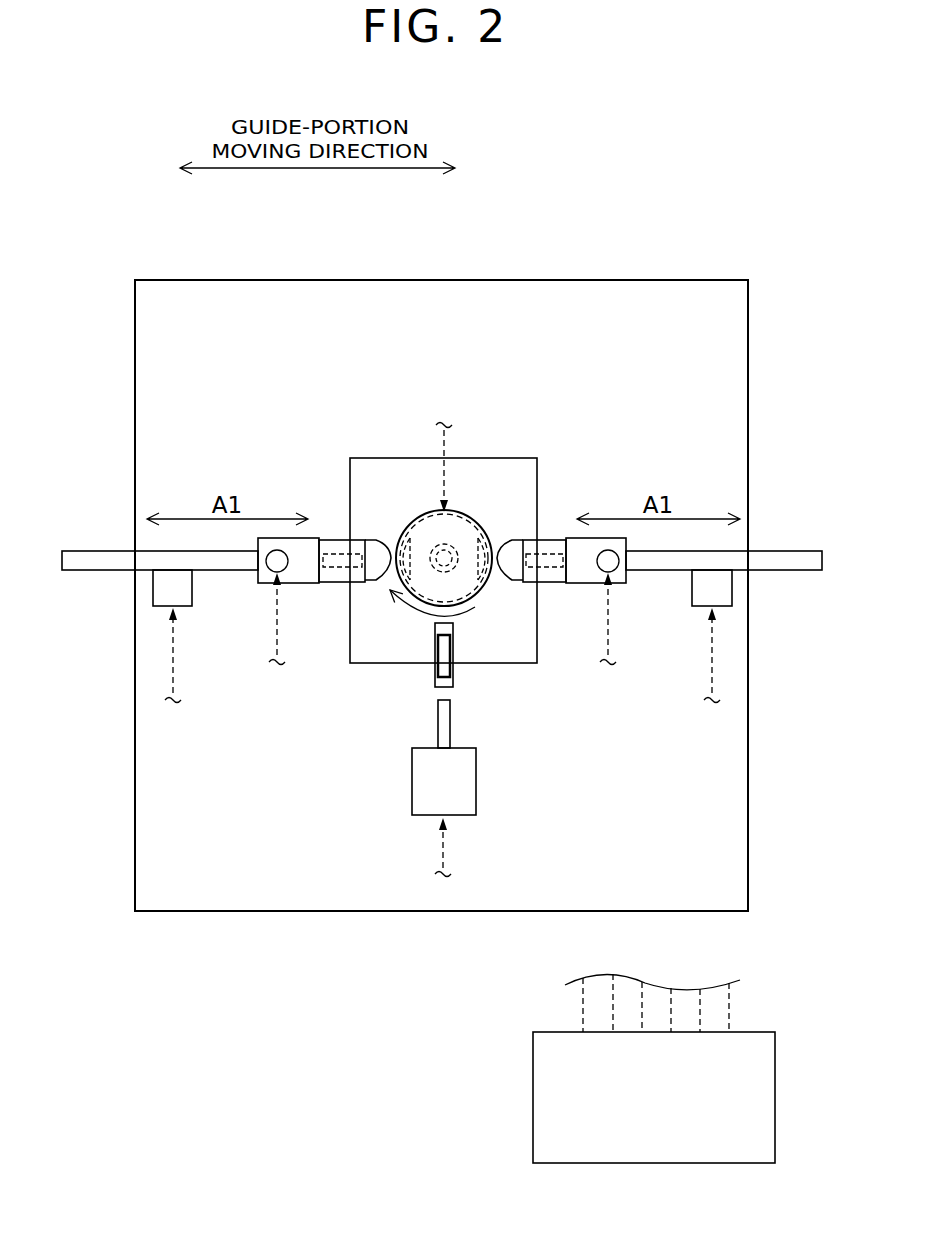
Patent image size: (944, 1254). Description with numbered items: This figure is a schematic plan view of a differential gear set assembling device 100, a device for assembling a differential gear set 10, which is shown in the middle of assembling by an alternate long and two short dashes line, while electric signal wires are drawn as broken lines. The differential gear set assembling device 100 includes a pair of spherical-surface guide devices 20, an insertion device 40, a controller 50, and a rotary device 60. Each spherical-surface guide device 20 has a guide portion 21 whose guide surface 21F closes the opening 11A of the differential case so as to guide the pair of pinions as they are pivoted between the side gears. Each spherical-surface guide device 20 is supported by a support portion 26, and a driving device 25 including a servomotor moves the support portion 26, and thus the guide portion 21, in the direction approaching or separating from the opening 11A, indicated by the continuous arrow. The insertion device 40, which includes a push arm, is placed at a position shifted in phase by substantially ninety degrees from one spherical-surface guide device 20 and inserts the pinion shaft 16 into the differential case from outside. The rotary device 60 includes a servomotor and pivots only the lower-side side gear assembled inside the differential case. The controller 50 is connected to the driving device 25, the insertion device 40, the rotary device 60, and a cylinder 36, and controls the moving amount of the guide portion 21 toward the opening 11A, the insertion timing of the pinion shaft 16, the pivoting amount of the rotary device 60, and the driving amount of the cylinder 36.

The differential gear set assembling device 100 is at (631, 258).
The differential gear set 10 is at (432, 518).
The rotary device 60 is at (468, 518).
The opening 11A is at (392, 543).
The guide surface 21F is at (385, 593).
The guide portion 21 is at (343, 580).
The cylinder 36 is at (273, 575).
The spherical-surface guide device 20 is at (223, 668).
The support portion 26 is at (121, 566).
The driving device 25 is at (158, 607).
The pinion shaft 16 is at (455, 648).
The insertion device 40 is at (472, 775).
The controller 50 is at (670, 1112).